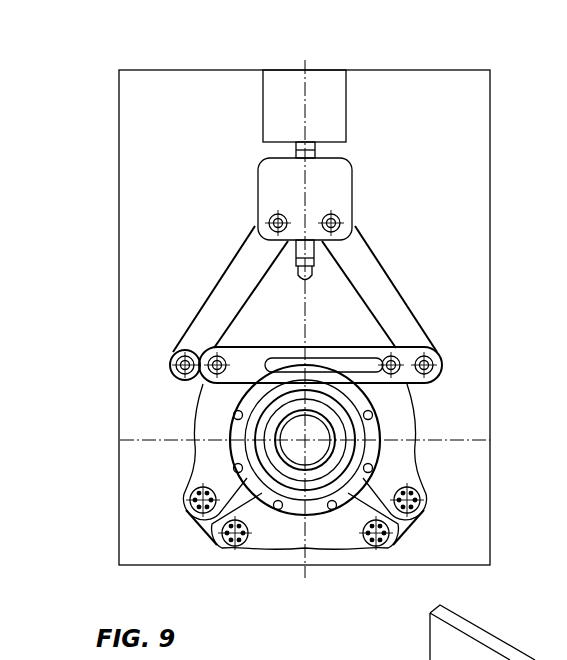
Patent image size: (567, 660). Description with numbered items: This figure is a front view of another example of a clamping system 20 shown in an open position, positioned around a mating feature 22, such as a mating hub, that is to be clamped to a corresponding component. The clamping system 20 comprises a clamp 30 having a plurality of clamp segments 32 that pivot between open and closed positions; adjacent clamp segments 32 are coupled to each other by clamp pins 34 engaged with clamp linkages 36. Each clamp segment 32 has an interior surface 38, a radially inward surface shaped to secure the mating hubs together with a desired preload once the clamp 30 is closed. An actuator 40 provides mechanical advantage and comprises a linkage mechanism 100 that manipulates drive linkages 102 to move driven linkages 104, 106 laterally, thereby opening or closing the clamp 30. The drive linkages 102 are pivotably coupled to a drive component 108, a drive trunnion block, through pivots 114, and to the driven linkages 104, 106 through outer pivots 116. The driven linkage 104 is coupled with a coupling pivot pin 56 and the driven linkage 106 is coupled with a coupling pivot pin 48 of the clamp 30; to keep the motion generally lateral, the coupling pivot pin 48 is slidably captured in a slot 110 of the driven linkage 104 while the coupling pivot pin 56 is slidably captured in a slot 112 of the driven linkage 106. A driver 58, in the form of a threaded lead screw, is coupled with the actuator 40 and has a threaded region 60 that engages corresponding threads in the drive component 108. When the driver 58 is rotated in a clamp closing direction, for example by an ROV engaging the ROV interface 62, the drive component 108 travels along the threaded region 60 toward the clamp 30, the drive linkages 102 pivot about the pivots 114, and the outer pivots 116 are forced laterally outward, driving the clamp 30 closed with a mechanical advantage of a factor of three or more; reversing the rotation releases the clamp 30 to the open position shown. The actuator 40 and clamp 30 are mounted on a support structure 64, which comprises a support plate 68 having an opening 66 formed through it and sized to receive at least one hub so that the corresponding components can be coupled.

The clamping system 20 is at (417, 47).
The mating feature 22 is at (297, 503).
The clamp 30 is at (432, 428).
The clamp segment 32 is at (210, 461).
The clamp pin 34 is at (182, 512).
The clamp linkage 36 is at (212, 538).
The interior surface 38 is at (223, 434).
The actuator 40 is at (215, 253).
The coupling pivot pin 48 is at (219, 353).
The coupling pivot pin 56 is at (398, 358).
The driver 58 is at (288, 152).
The threaded region 60 is at (290, 259).
The ROV interface 62 is at (348, 123).
The support structure 64 is at (160, 68).
The opening 66 is at (358, 447).
The support plate 68 is at (479, 98).
The linkage mechanism 100 is at (413, 262).
The drive linkage 102 is at (228, 300).
The driven linkage 104 is at (190, 385).
The driven linkage 106 is at (408, 406).
The drive component 108 is at (355, 182).
The slot 110 is at (331, 358).
The slot 112 is at (364, 358).
The pivot 114 is at (274, 215).
The pivot 116 is at (181, 357).